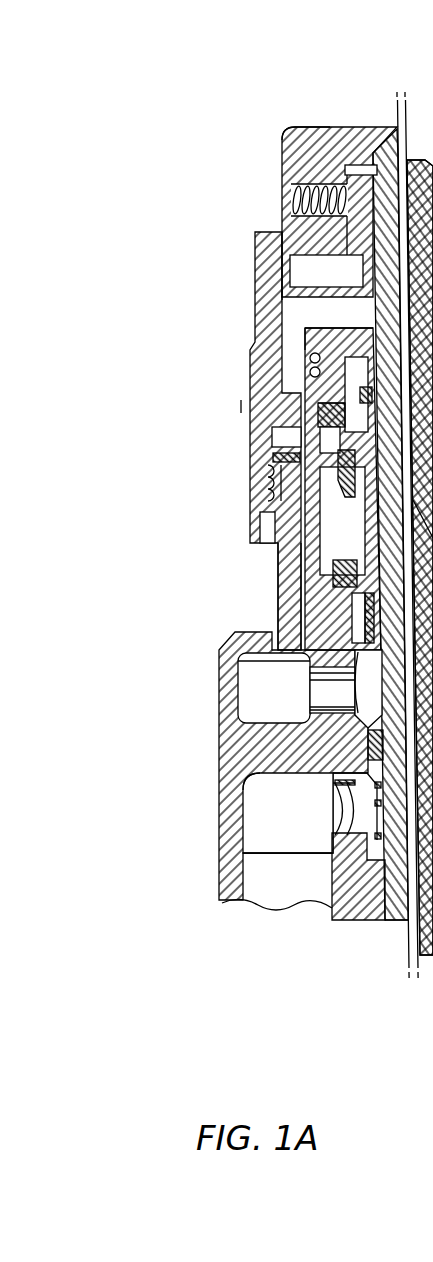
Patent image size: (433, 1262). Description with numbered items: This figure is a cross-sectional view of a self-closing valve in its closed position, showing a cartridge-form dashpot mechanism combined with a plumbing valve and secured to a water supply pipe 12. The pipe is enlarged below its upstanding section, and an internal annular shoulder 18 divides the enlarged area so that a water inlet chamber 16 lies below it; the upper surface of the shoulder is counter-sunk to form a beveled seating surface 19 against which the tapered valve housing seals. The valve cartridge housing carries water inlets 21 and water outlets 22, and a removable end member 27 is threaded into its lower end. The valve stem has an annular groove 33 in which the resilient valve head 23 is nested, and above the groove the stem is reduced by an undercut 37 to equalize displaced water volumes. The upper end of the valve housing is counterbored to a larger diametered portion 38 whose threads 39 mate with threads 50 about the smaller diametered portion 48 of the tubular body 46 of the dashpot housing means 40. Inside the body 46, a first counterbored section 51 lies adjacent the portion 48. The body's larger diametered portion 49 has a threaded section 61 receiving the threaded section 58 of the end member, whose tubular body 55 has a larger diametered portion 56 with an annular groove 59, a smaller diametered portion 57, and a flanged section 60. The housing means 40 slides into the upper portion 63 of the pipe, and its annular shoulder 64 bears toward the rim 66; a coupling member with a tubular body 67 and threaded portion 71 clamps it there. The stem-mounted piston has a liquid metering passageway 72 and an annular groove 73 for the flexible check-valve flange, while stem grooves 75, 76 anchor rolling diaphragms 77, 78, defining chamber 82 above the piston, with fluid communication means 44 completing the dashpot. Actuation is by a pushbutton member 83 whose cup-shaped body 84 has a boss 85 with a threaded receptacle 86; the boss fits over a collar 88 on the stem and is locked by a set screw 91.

The water supply pipe 12 is at (240, 893).
The water inlet chamber 16 is at (285, 862).
The internal annular shoulder 18 is at (300, 782).
The beveled seating surface 19 is at (320, 742).
The water inlets 21 is at (290, 837).
The water outlets 22 is at (335, 718).
The valve head 23 is at (300, 748).
The removable end member 27 is at (333, 922).
The annular groove 33 is at (352, 812).
The undercut 37 is at (352, 700).
The larger diametered portion 38 is at (330, 692).
The threads 39 is at (245, 648).
The housing means 40 is at (157, 310).
The fluid communication means 44 is at (420, 557).
The tubular body 46 is at (282, 552).
The smaller diametered portion 48 is at (290, 590).
The larger diametered portion 49 is at (310, 362).
The threads 50 is at (265, 660).
The first counterbored section 51 is at (290, 615).
The tubular body 55 is at (292, 330).
The larger diametered portion 56 is at (318, 416).
The smaller diametered portion 57 is at (255, 240).
The threaded section 58 is at (300, 348).
The annular groove 59 is at (322, 412).
The flanged section 60 is at (305, 327).
The threaded section 61 is at (308, 392).
The upper portion 63 is at (285, 462).
The annular shoulder 64 is at (300, 442).
The rim 66 is at (270, 472).
The tubular body 67 is at (282, 218).
The threaded portion 71 is at (268, 518).
The liquid metering passageway 72 is at (382, 466).
The annular groove 73 is at (423, 511).
The annular groove 75 is at (378, 618).
The annular groove 76 is at (360, 418).
The rolling diaphragm 77 is at (367, 645).
The rolling diaphragm 78 is at (347, 390).
The chamber 82 is at (353, 545).
The pushbutton member 83 is at (377, 152).
The cup-shaped body 84 is at (364, 112).
The boss 85 is at (312, 256).
The threaded receptacle 86 is at (297, 127).
The collar 88 is at (347, 162).
The set screw 91 is at (300, 192).